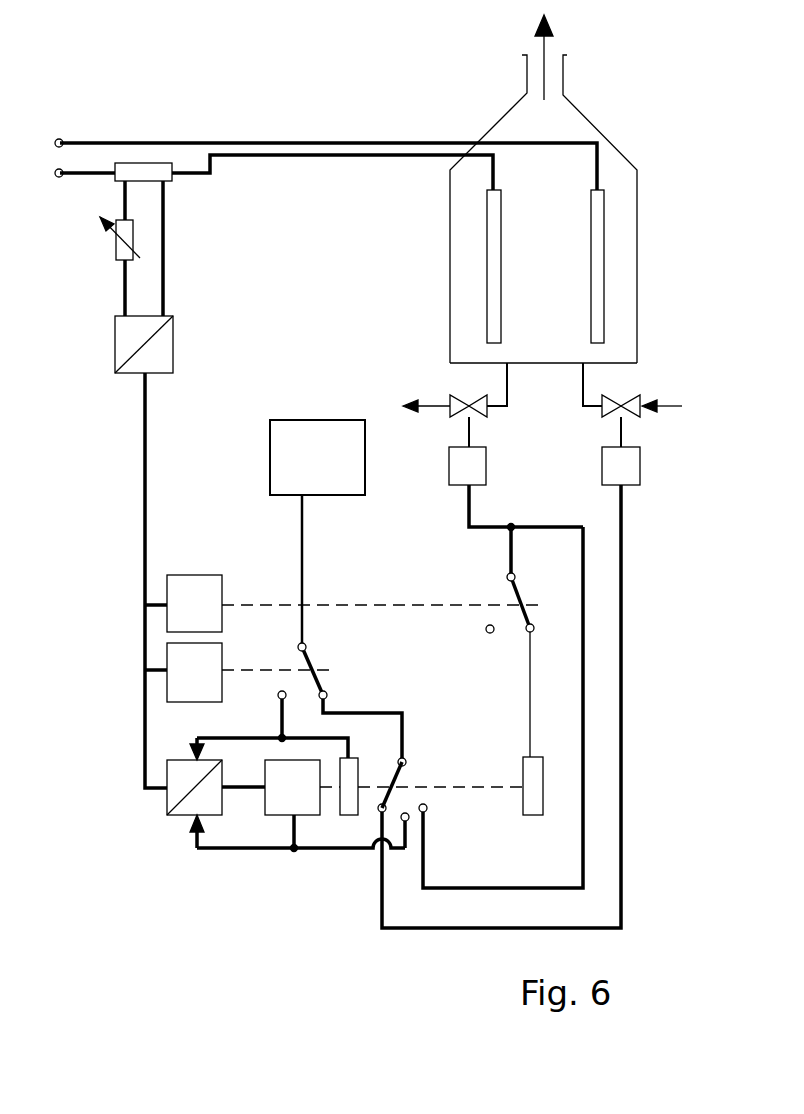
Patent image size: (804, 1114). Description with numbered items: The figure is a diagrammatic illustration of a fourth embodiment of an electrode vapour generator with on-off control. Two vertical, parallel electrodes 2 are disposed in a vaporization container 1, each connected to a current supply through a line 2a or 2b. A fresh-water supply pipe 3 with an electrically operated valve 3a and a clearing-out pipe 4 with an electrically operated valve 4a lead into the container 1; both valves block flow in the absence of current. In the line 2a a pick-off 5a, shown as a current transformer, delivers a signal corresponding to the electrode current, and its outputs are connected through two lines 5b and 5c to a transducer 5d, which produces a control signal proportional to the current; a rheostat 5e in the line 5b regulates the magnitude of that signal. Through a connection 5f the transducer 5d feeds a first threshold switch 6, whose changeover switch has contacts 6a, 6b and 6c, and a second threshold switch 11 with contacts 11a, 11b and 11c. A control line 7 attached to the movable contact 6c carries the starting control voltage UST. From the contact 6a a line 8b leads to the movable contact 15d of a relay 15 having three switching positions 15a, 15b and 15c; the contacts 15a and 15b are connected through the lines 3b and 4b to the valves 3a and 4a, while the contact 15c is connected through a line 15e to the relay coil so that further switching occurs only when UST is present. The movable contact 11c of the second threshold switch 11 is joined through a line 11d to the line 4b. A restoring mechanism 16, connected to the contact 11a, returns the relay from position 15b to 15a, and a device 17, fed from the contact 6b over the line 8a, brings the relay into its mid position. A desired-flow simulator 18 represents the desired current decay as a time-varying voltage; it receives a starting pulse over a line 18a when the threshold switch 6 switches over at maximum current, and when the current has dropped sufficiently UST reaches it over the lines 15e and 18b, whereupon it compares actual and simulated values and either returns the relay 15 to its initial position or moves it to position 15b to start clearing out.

The vaporization container 1 is at (627, 205).
The electrodes 2 is at (494, 296).
The line 2a is at (367, 155).
The line 2b is at (380, 143).
The fresh-water supply pipe 3 is at (583, 400).
The electrically operated valve 3a is at (621, 437).
The line 3b is at (407, 930).
The clearing-out pipe 4 is at (507, 395).
The electrically operated valve 4a is at (469, 437).
The line 4b is at (438, 890).
The pick-off 5a is at (155, 172).
The line 5b is at (124, 294).
The line 5c is at (164, 292).
The transducer 5d is at (160, 357).
The rheostat 5e is at (127, 233).
The connection 5f is at (145, 450).
The threshold switch 6 is at (180, 688).
The contact 6a is at (330, 695).
The free contact 6b is at (278, 695).
The movable contact 6c is at (308, 647).
The control line 7 is at (302, 545).
The line 8a is at (282, 718).
The line 8b is at (402, 715).
The second threshold switch 11 is at (193, 592).
The fixed contact 11a is at (535, 631).
The fixed contact 11b is at (484, 630).
The movable contact 11c is at (518, 575).
The line 11d is at (511, 545).
The relay 15 is at (278, 805).
The switching position 15a is at (380, 812).
The switching position 15b is at (427, 812).
The contact 15c is at (408, 822).
The movable contact 15d is at (406, 760).
The line 15e is at (313, 850).
The restoring mechanism 16 is at (535, 808).
The device 17 is at (352, 772).
The desired-flow simulator 18 is at (175, 792).
The line 18a is at (207, 738).
The line 18b is at (215, 850).